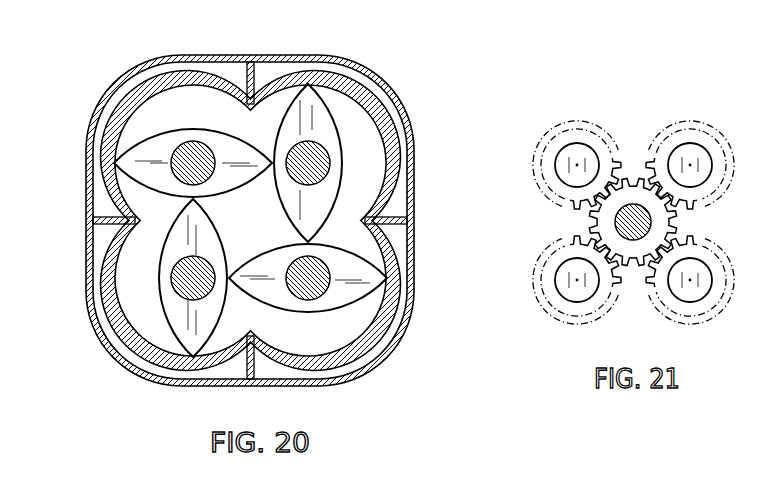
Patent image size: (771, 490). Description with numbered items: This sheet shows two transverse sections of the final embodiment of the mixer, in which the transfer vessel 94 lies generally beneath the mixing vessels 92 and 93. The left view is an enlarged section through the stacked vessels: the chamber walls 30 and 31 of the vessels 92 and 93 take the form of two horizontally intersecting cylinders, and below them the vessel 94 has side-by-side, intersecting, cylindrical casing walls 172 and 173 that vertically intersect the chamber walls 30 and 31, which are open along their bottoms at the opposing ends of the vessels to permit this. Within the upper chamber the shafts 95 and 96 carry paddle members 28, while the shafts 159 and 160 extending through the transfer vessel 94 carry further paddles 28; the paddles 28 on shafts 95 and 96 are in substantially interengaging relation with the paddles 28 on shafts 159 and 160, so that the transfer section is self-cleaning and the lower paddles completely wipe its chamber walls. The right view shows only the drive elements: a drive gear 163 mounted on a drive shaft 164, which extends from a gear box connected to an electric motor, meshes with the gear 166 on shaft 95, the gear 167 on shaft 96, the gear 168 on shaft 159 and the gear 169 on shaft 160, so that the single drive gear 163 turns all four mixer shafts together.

In FIG. 20, the paddle member 28 is at (152, 152).
In FIG. 20, the chamber wall 30 is at (247, 196).
In FIG. 20, the chamber wall 31 is at (352, 88).
In FIG. 20, the mixing vessel 92 is at (309, 220).
In FIG. 20, the mixing vessel 93 is at (288, 220).
In FIG. 20, the transfer vessel 94 is at (424, 248).
In FIG. 20, the shaft 95 is at (200, 152).
In FIG. 21, the shaft 95 is at (585, 150).
In FIG. 20, the shaft 96 is at (328, 164).
In FIG. 21, the shaft 96 is at (697, 150).
In FIG. 20, the shaft 159 is at (180, 287).
In FIG. 21, the shaft 159 is at (563, 283).
In FIG. 20, the shaft 160 is at (322, 292).
In FIG. 21, the shaft 160 is at (700, 287).
In FIG. 21, the drive gear 163 is at (661, 223).
In FIG. 21, the drive shaft 164 is at (614, 223).
In FIG. 21, the gear 166 is at (583, 124).
In FIG. 21, the gear 167 is at (700, 124).
In FIG. 21, the gear 168 is at (567, 313).
In FIG. 21, the gear 169 is at (682, 317).
In FIG. 20, the cylindrical casing wall 172 is at (181, 338).
In FIG. 20, the cylindrical casing wall 173 is at (368, 348).